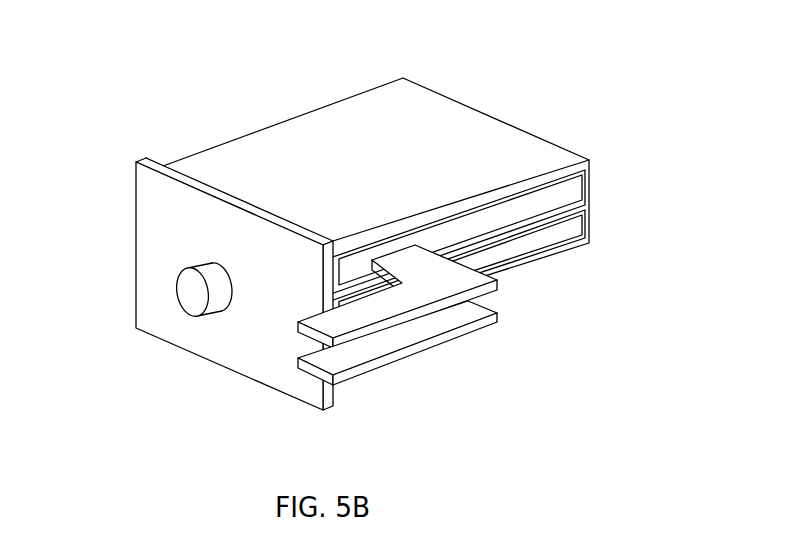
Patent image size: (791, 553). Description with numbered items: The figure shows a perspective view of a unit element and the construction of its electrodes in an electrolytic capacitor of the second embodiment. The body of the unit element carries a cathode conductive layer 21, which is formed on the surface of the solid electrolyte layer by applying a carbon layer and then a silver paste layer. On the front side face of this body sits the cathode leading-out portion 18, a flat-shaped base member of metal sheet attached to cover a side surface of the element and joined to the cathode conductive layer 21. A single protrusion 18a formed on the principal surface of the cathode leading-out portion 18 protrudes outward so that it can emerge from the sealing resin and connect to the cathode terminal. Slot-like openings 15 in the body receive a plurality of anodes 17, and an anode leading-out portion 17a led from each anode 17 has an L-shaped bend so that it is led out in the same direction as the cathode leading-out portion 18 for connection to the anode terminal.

The cathode conductive layer 21 is at (455, 130).
The slot 15 is at (567, 188).
The anode 17 is at (443, 277).
The anode leading-out portion 17a is at (310, 364).
The cathode leading-out portion 18 is at (215, 335).
The protrusion 18a is at (188, 294).